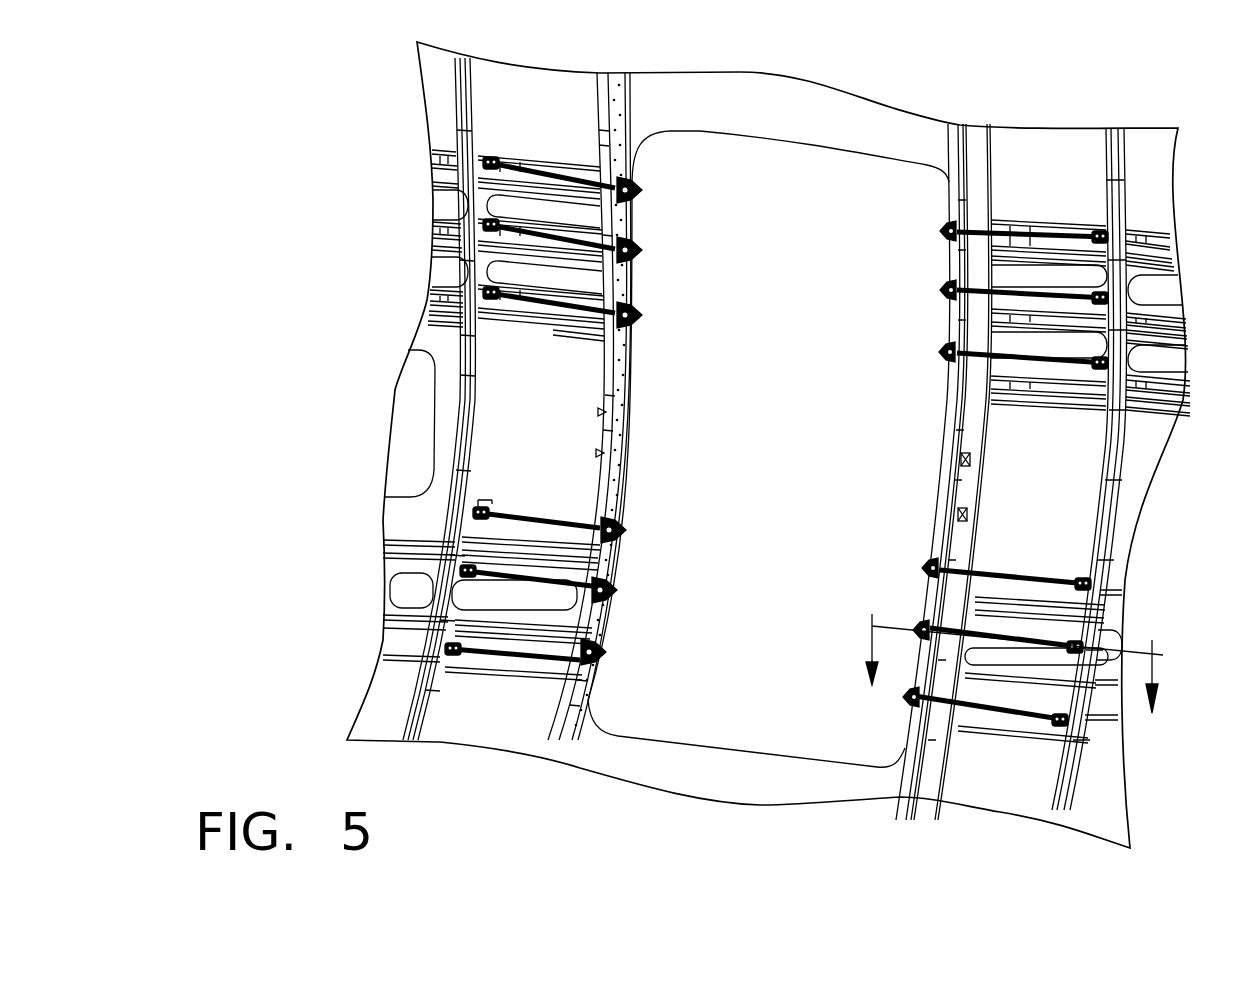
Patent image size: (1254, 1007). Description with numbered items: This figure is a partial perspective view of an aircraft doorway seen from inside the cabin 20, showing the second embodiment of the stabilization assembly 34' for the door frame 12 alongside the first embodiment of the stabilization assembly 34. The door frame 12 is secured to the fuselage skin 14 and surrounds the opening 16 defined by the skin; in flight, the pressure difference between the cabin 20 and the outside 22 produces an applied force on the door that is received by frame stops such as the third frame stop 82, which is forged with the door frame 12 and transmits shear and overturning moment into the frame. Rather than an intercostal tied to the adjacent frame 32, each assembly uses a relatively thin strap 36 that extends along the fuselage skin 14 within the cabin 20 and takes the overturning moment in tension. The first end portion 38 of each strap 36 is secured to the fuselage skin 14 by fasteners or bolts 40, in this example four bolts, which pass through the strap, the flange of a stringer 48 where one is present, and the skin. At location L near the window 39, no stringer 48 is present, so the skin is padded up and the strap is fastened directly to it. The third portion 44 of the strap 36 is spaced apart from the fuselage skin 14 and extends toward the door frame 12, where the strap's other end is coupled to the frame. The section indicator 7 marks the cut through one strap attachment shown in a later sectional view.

The door frame 12 is at (942, 517).
The fuselage skin 14 is at (510, 362).
The opening 16 is at (905, 218).
The cabin 20 is at (1110, 813).
The outside 22 is at (790, 452).
The adjacent frame 32 is at (1115, 205).
The stabilization assembly 34 is at (530, 408).
The stabilization assembly 34' is at (1059, 473).
The strap 36 is at (530, 525).
The first end portion 38 is at (486, 498).
The window 39 is at (402, 471).
The first fastener 40 is at (484, 512).
The third portion 44 is at (532, 520).
The stringer 48 is at (560, 346).
The third frame stop 82 is at (917, 618).
The section line 7- 7 is at (1014, 658).
The location L is at (506, 500).